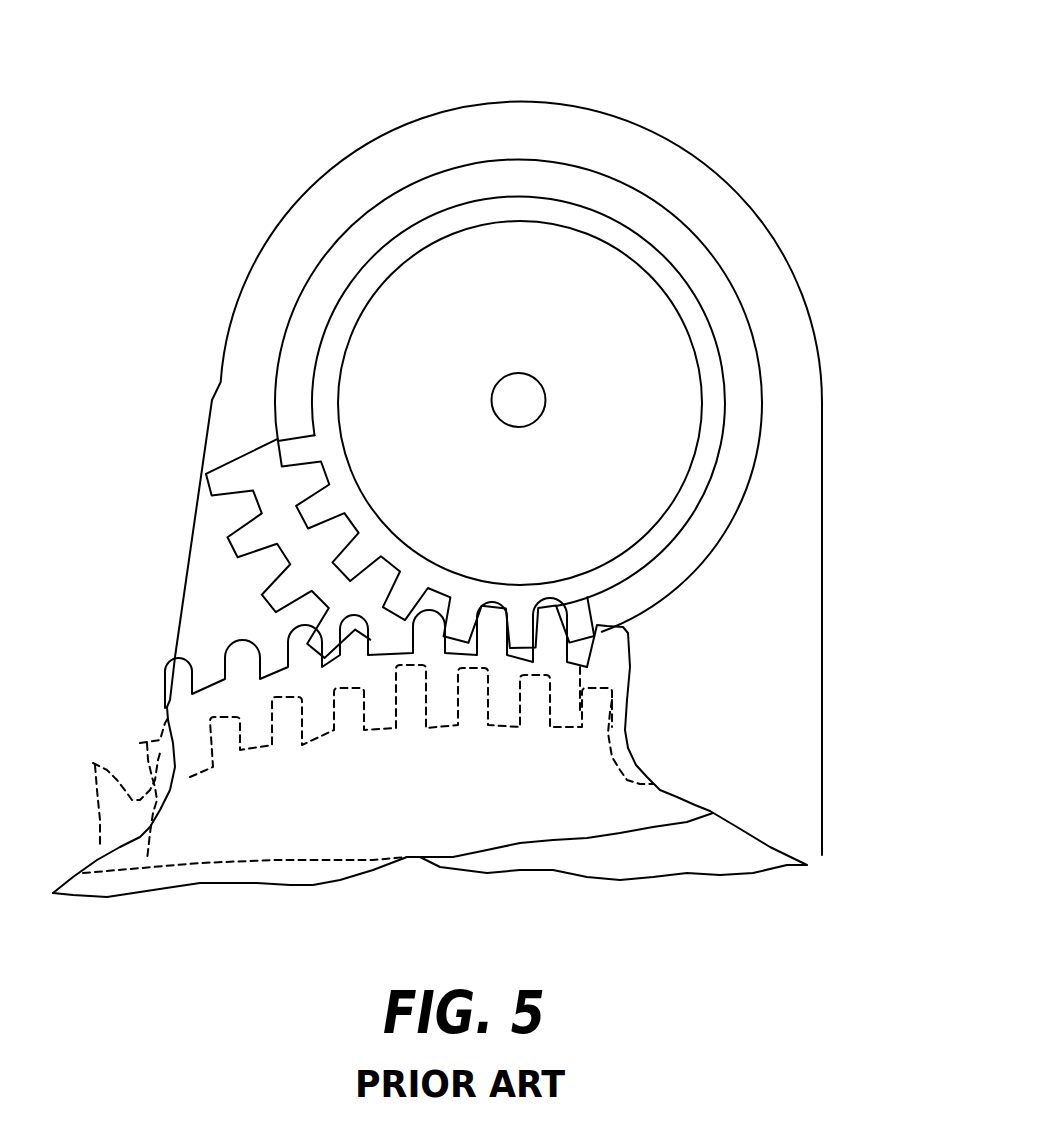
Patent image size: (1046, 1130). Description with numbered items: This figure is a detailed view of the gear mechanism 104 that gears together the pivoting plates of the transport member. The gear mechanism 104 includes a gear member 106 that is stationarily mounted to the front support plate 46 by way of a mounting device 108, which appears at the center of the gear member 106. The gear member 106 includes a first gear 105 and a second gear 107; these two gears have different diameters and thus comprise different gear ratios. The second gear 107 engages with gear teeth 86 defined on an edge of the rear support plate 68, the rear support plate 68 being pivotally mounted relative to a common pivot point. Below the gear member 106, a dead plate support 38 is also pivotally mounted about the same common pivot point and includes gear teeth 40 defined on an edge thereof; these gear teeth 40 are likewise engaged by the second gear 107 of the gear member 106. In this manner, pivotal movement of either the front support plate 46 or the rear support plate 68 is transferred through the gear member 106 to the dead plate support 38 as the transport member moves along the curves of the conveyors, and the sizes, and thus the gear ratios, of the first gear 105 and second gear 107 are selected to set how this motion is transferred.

The gear mechanism 104 is at (462, 468).
The front support plate 46 is at (800, 489).
The gear member 106 is at (549, 298).
The mounting device 108 is at (530, 400).
The first gear 105 is at (640, 553).
The second gear 107 is at (240, 470).
The gear teeth 86 is at (165, 675).
The dead plate support 38 is at (650, 782).
The gear teeth 40 is at (92, 755).
The rear support plate 68 is at (205, 850).